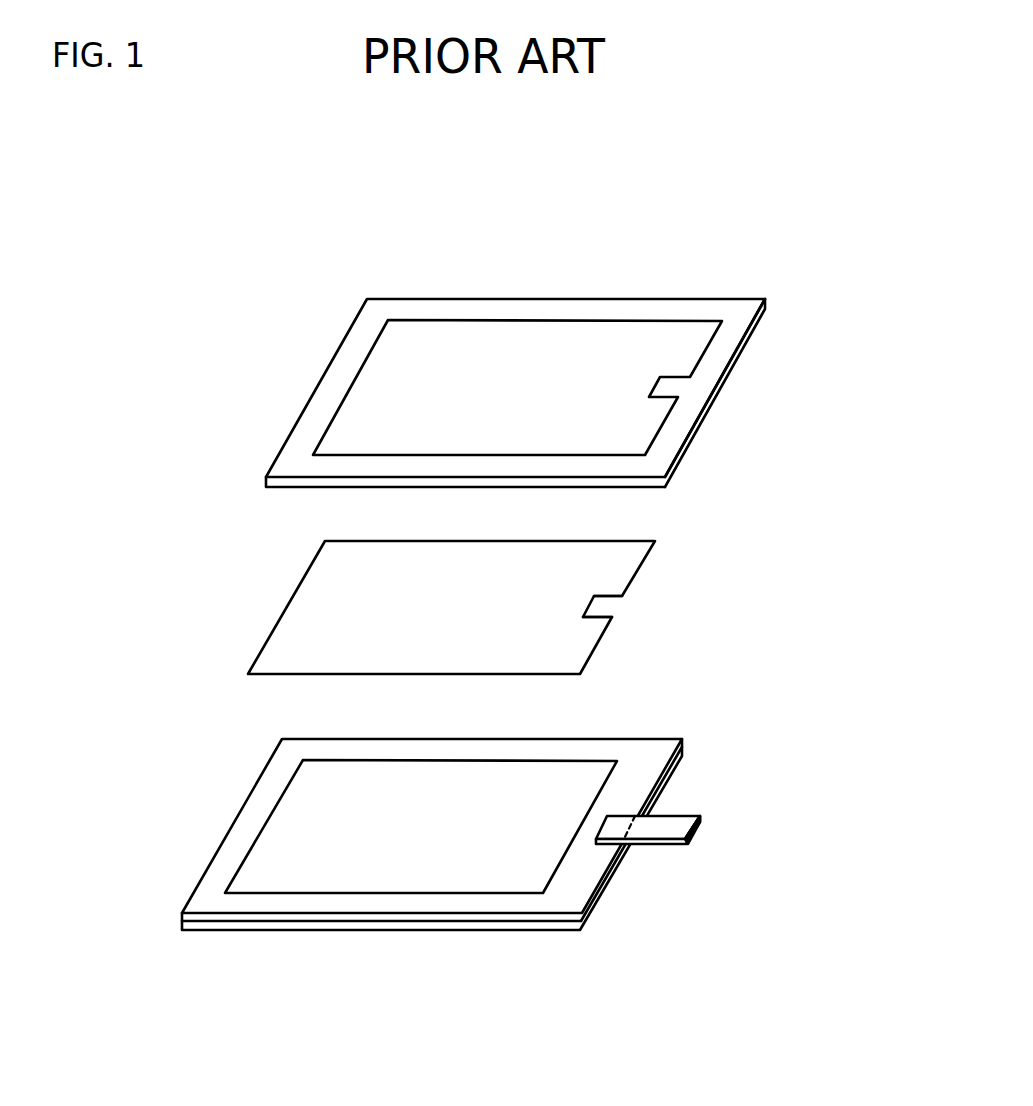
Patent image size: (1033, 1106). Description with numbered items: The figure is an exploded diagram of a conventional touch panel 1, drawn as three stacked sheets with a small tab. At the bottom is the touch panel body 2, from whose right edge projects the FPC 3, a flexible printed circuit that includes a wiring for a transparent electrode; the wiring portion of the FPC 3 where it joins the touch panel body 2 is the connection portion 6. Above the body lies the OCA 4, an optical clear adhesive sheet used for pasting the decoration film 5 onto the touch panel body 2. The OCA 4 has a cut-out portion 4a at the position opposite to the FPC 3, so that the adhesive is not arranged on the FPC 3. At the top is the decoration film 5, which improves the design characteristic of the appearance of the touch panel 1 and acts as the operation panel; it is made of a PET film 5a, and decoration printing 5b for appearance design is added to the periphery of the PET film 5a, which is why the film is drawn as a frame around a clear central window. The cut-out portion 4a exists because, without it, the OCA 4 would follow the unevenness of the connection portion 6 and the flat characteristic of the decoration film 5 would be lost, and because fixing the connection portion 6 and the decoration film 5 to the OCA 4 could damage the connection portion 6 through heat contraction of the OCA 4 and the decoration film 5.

The touch panel 1 is at (528, 171).
The touch panel body 2 is at (233, 825).
The FPC (Flexible Printed Circuit) 3 is at (670, 826).
The OCA (Optical Clear Adhesive) 4 is at (463, 607).
The cut-out portion 4a is at (607, 608).
The decoration film 5 is at (508, 393).
The PET (Polyethylene terephthalate) film 5a is at (515, 393).
The decoration printing 5b is at (720, 352).
The connection portion 6 is at (610, 828).